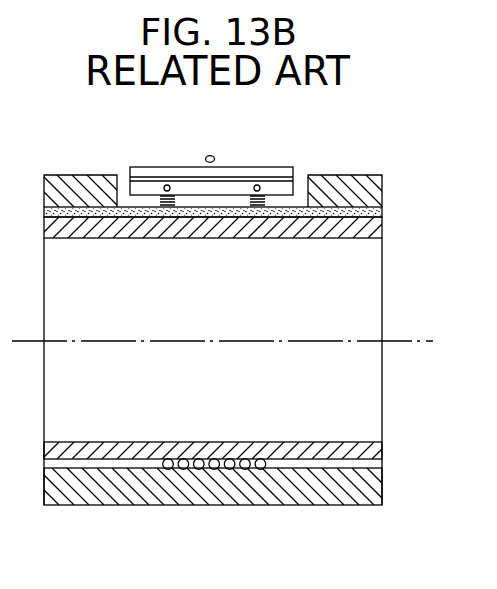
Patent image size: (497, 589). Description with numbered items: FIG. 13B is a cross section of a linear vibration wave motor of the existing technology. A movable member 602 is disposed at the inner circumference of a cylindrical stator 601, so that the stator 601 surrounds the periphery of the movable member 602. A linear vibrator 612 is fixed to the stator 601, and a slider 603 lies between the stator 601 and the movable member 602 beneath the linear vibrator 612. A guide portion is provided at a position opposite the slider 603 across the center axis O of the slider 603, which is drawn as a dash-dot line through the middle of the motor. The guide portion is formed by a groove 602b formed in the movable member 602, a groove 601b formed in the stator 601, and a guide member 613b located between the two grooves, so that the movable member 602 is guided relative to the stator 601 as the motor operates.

The stator 601 is at (367, 194).
The slider 603 is at (378, 212).
The movable member 602 is at (370, 232).
The linear vibrator 612 is at (268, 161).
The groove 602b is at (365, 445).
The guide member 613b is at (183, 459).
The groove 601b is at (183, 470).
The center axis O is at (408, 341).